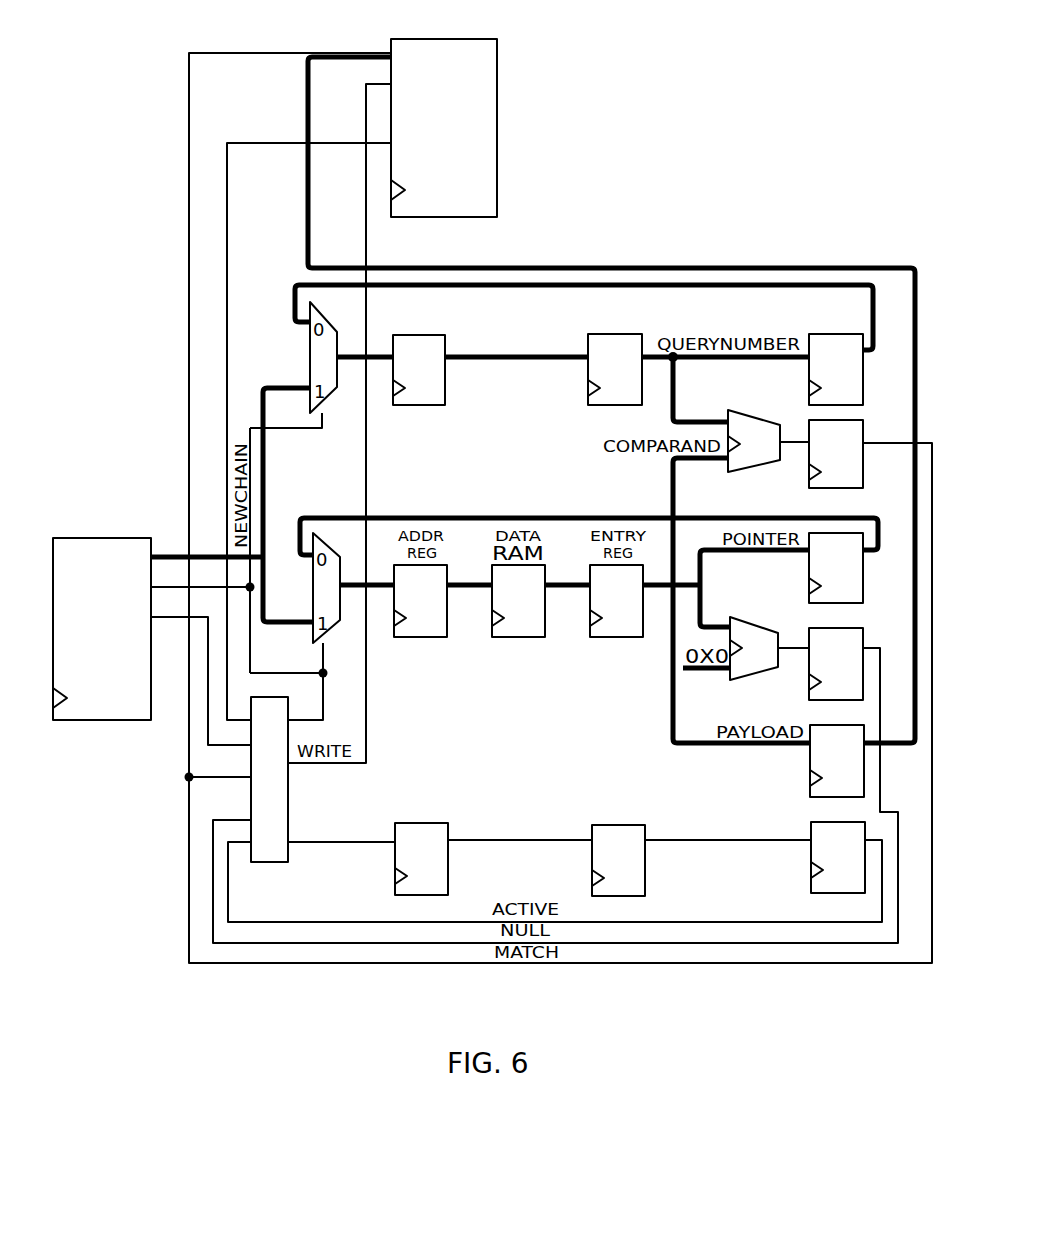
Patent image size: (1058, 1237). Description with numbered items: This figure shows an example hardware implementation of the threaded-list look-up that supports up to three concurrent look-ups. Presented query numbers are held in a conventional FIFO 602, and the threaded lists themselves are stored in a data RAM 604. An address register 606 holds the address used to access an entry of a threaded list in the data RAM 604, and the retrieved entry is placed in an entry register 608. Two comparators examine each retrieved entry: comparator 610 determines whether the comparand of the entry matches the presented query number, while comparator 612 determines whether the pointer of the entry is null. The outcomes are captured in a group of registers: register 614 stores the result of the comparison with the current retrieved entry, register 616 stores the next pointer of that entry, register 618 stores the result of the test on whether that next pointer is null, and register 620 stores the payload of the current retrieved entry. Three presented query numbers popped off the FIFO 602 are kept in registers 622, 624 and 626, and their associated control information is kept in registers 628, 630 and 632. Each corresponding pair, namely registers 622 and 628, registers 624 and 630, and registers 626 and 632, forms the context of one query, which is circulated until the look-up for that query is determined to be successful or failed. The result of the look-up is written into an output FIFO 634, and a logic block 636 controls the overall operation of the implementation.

The FIFO 602 is at (100, 720).
The data RAM 604 is at (518, 637).
The address register 606 is at (422, 637).
The entry register 608 is at (618, 637).
The comparator 610 is at (757, 410).
The comparator 612 is at (765, 635).
The register 614 is at (860, 486).
The register 616 is at (858, 596).
The register 618 is at (860, 636).
The register 620 is at (814, 782).
The register 622 is at (425, 335).
The register 624 is at (606, 334).
The register 626 is at (852, 334).
The register 628 is at (428, 823).
The register 630 is at (612, 825).
The register 632 is at (818, 876).
The output FIFO 634 is at (497, 183).
The logic block 636 is at (288, 802).